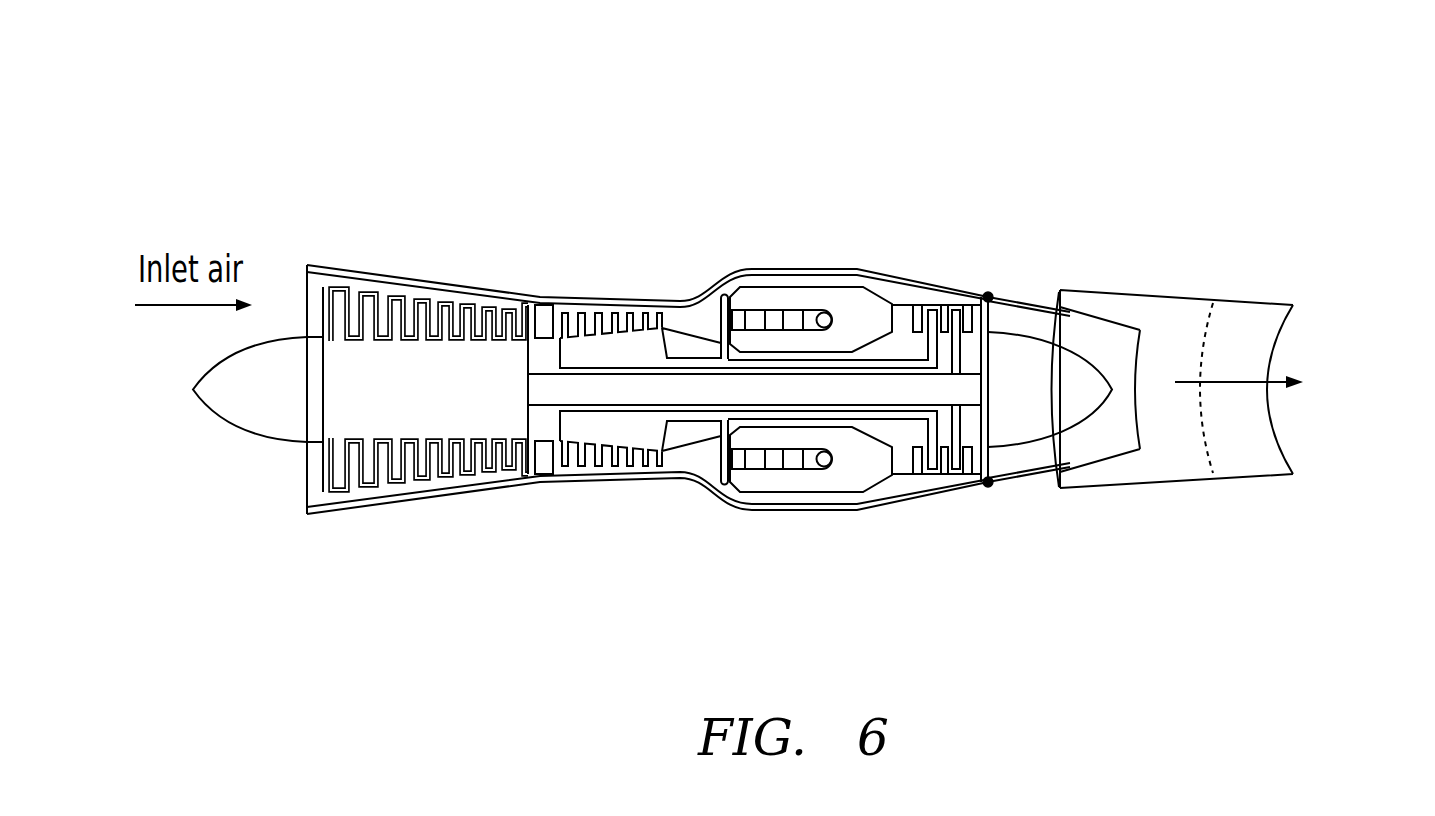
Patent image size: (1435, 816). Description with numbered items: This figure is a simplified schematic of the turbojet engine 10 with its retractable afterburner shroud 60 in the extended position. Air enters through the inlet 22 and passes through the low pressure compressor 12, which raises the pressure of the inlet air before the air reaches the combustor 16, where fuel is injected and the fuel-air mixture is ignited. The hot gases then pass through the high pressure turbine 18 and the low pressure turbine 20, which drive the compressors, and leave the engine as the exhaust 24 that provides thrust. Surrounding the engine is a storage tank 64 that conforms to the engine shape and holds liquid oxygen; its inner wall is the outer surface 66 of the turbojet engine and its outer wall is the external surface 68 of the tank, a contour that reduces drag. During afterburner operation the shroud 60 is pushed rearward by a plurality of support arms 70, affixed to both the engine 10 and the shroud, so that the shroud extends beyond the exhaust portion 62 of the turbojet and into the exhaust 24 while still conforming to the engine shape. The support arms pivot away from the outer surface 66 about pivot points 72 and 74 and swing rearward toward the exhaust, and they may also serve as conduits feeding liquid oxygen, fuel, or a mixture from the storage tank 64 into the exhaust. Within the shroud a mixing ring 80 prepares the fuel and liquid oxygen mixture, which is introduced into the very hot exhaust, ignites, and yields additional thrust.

The turbojet engine 10 is at (996, 86).
The low pressure compressor 12 is at (330, 268).
The combustor 16 is at (762, 309).
The high pressure turbine 18 is at (902, 462).
The low pressure turbine 20 is at (947, 304).
The inlet 22 is at (246, 496).
The exhaust 24 is at (1342, 343).
The retractable afterburner shroud 60 is at (1137, 293).
The exhaust portion 62 is at (1131, 468).
The storage tank 64 is at (535, 295).
The outer surface 66 is at (395, 270).
The external surface 68 is at (494, 499).
The support arms 70 is at (1015, 298).
The pivot point 72 is at (988, 292).
The pivot point 74 is at (989, 487).
The mixing ring 80 is at (1258, 312).